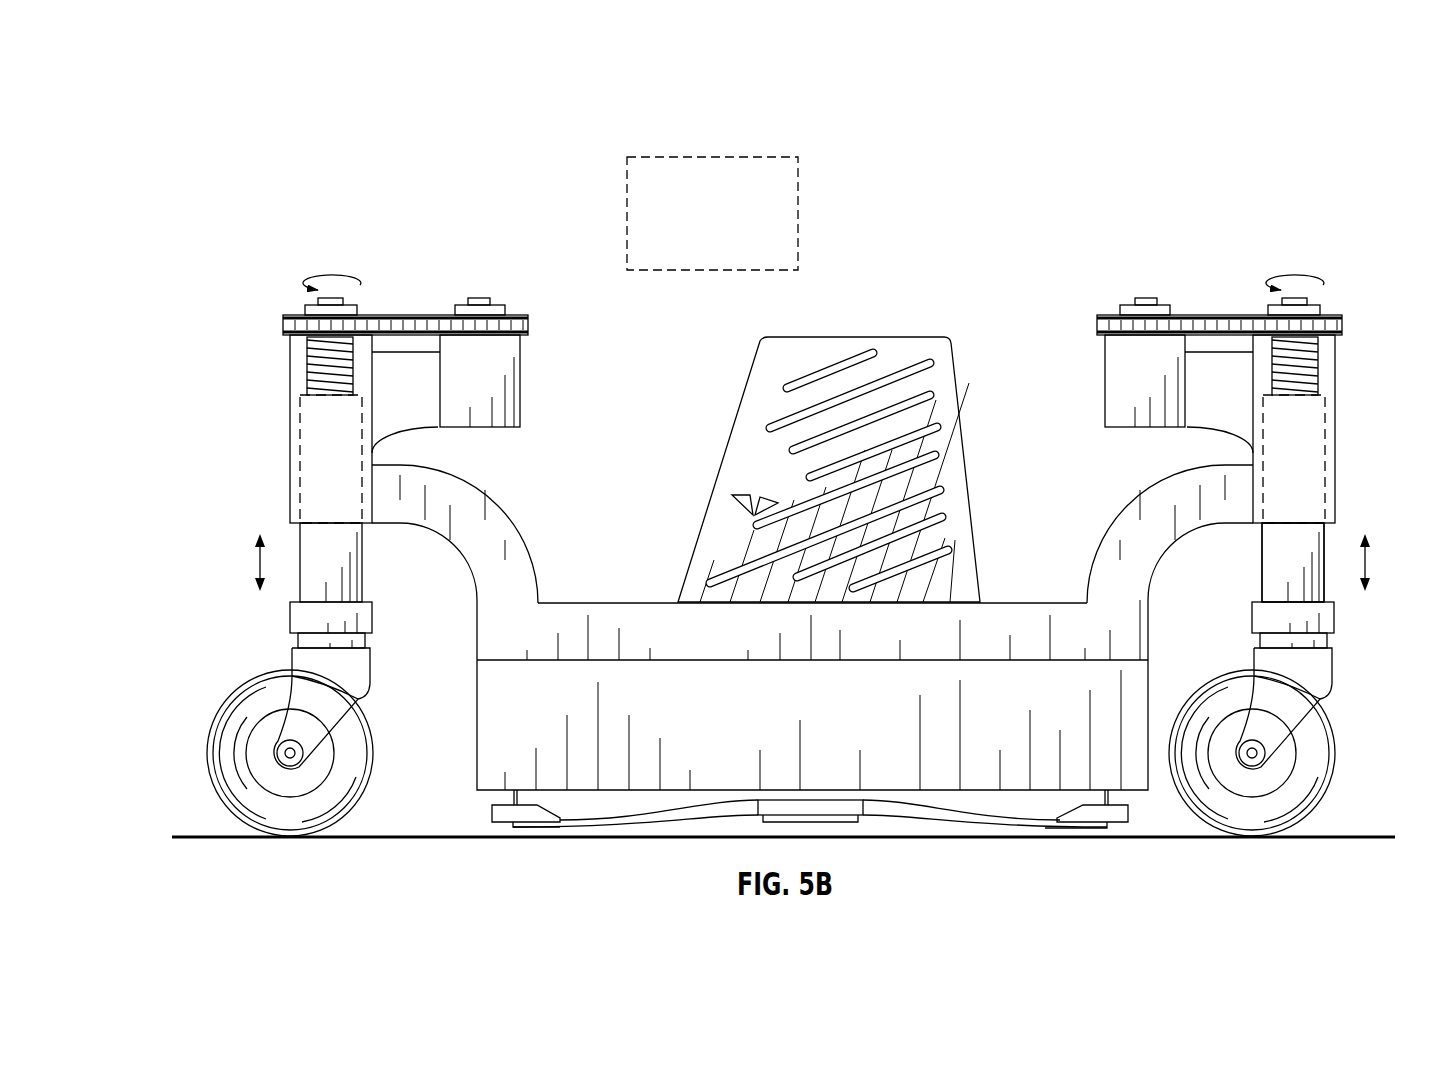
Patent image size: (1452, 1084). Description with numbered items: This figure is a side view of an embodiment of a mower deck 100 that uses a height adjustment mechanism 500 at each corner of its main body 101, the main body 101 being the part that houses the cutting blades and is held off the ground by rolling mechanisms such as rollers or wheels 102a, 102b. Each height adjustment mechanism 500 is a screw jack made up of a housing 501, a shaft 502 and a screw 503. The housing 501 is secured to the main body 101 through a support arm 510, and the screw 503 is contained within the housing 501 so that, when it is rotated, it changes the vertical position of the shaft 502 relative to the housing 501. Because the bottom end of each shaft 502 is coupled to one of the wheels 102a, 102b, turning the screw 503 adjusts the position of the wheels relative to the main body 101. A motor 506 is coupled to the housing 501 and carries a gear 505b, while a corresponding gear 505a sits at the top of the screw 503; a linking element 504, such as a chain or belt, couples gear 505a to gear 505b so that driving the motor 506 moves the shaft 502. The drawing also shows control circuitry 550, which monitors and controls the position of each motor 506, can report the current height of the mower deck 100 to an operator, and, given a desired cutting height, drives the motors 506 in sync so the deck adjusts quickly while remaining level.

The mower deck 100 is at (480, 180).
The main body 101 is at (646, 532).
The roller 102a is at (235, 818).
The roller 102b is at (1327, 808).
The height adjustment mechanism 500 is at (301, 224).
The housing 501 is at (1336, 450).
The shaft 502 is at (1330, 535).
The screw 503 is at (1321, 365).
The linking element 504 is at (1211, 299).
The gear 505a is at (1266, 295).
The gear 505b is at (1121, 297).
The motor 506 is at (1113, 380).
The support arm 510 is at (1093, 530).
The control circuitry 550 is at (728, 259).